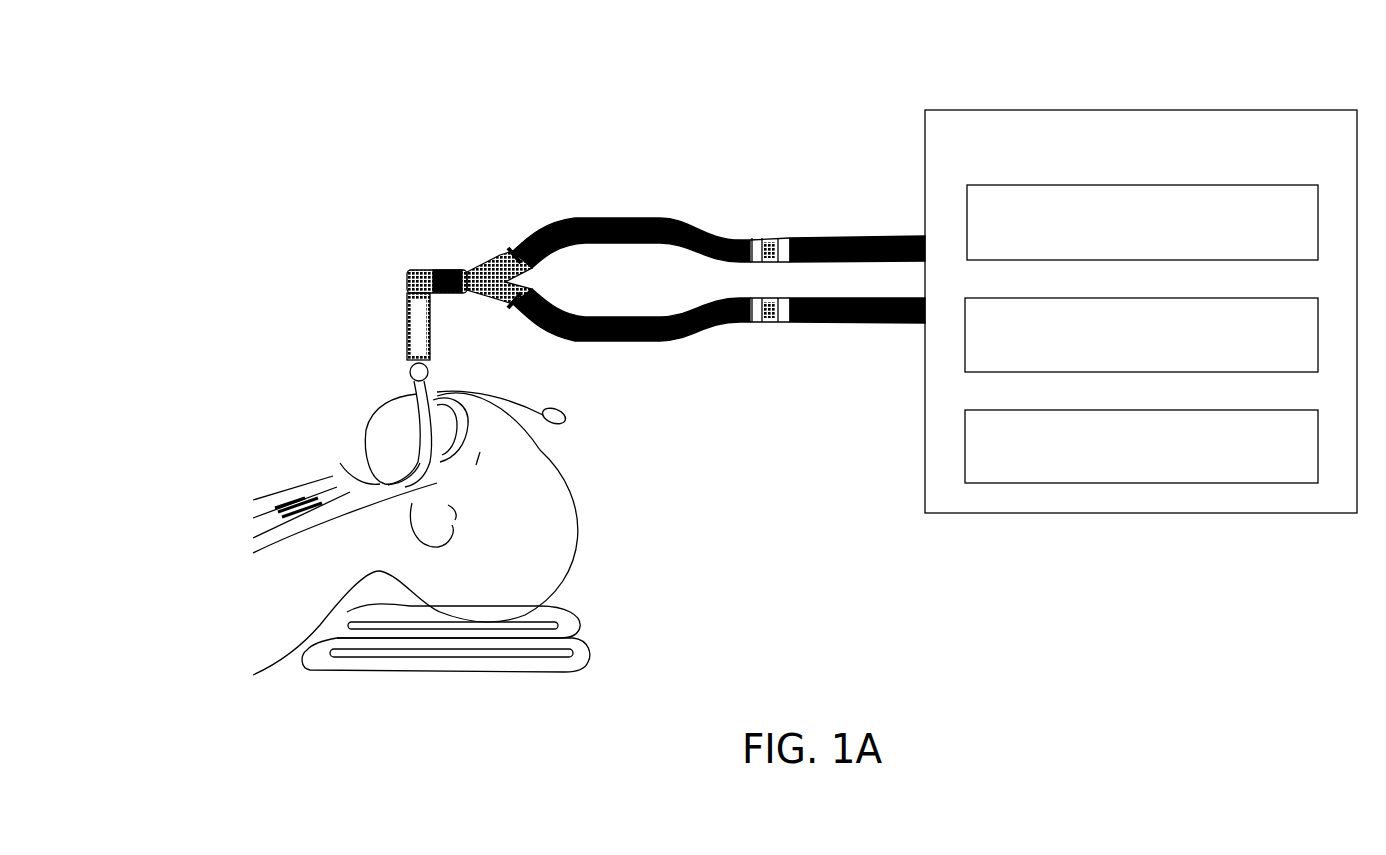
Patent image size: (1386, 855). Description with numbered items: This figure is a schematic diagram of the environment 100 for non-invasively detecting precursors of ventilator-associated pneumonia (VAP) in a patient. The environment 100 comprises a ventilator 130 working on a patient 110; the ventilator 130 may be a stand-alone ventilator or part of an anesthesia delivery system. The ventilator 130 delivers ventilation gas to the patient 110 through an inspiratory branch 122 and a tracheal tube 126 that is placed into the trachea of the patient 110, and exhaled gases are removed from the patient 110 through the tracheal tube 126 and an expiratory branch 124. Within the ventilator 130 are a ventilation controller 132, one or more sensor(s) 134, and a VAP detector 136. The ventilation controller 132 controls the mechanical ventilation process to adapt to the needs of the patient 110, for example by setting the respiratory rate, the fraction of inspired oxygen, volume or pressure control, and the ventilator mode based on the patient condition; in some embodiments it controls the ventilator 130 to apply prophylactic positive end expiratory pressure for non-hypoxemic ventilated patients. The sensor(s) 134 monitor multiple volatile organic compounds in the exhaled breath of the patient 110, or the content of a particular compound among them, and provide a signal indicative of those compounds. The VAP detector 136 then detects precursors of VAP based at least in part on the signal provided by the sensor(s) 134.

The environment 100 is at (527, 104).
The patient 110 is at (286, 444).
The inspiratory branch 122 is at (627, 242).
The expiratory branch 124 is at (627, 340).
The tracheal tube 126 is at (354, 483).
The ventilator 130 is at (1225, 149).
The ventilation controller 132 is at (1295, 234).
The sensor(s) 134 is at (1220, 349).
The VAP detector 136 is at (1245, 461).